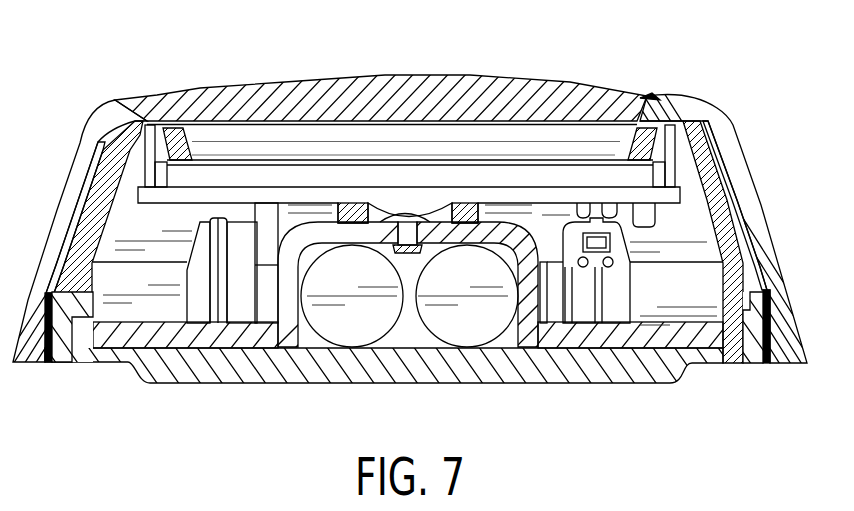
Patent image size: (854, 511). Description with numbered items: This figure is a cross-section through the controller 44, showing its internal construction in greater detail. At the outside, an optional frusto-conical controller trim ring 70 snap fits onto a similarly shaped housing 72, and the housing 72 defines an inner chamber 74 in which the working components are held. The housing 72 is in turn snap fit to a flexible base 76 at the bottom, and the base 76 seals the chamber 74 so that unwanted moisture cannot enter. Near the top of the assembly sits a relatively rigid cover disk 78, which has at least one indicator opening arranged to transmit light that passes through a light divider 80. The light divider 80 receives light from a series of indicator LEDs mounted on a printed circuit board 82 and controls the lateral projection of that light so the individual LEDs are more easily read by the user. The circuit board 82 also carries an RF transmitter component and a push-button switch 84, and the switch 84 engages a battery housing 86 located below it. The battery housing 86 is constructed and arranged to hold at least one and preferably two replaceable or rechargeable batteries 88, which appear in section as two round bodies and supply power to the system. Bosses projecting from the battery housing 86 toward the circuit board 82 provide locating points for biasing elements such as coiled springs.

The controller 44 is at (637, 77).
The controller trim ring 70 is at (740, 175).
The housing 72 is at (693, 143).
The inner chamber 74 is at (677, 233).
The flexible base 76 is at (647, 370).
The cover disk 78 is at (648, 100).
The light divider 80 is at (492, 147).
The printed circuit board 82 is at (262, 190).
The push-button switch 84 is at (410, 203).
The battery housing 86 is at (540, 330).
The batteries 88 is at (352, 305).